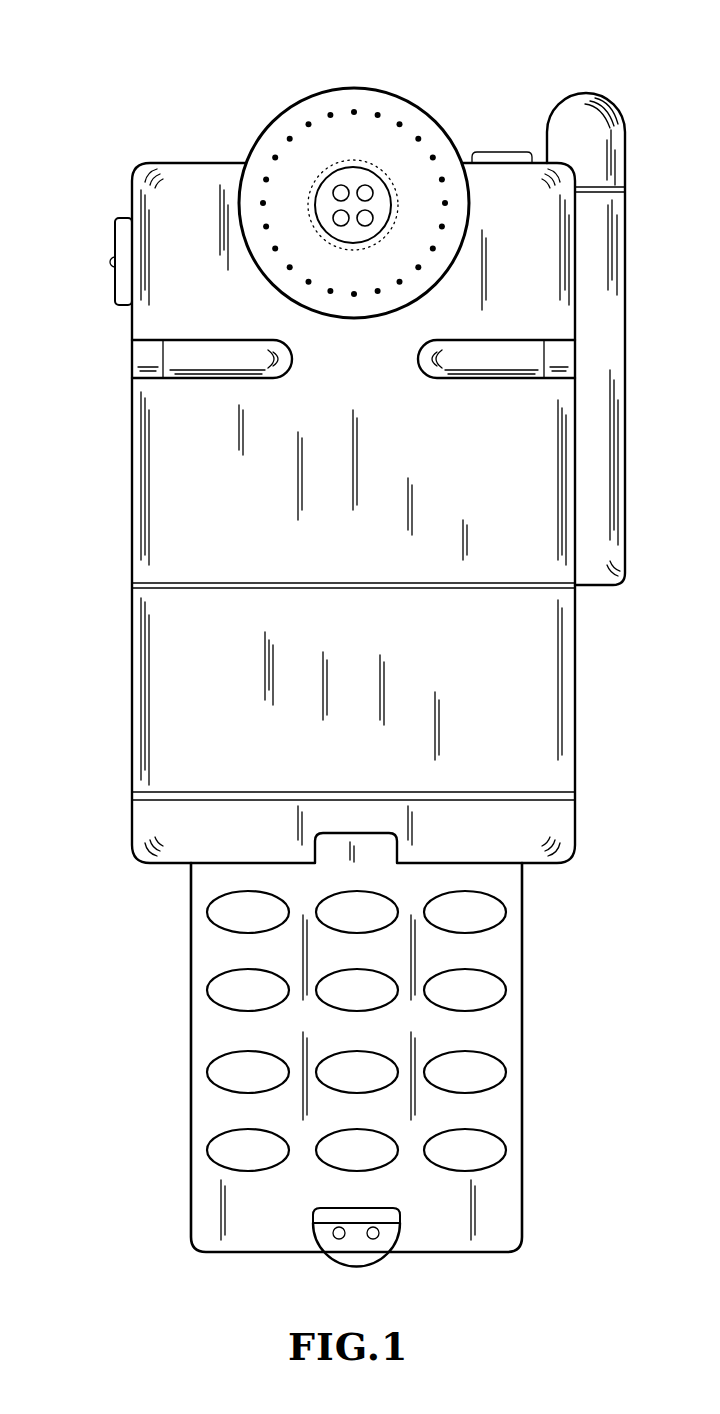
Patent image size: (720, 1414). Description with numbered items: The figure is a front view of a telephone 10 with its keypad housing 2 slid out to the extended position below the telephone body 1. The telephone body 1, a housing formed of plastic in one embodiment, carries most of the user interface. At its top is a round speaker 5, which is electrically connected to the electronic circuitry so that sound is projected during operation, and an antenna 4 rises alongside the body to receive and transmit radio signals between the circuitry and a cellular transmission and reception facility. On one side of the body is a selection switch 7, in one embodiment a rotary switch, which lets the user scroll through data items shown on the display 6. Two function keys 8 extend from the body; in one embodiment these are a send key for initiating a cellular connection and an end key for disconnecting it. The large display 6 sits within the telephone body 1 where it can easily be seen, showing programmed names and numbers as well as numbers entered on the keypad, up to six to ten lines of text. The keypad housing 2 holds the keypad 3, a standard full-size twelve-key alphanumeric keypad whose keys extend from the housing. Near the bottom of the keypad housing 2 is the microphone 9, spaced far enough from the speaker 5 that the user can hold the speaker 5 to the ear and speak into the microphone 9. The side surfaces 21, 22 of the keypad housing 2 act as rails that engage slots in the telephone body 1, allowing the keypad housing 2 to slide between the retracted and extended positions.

The telephone 10 is at (80, 47).
The telephone body 1 is at (124, 440).
The keypad housing 2 is at (507, 949).
The keypad 3 is at (181, 890).
The antenna 4 is at (620, 110).
The speaker 5 is at (290, 107).
The display 6 is at (135, 710).
The selection switch 7 is at (114, 243).
The function keys 8 is at (222, 340).
The microphone 9 is at (396, 1258).
The side surface 21 is at (186, 1200).
The side surface 22 is at (532, 1105).